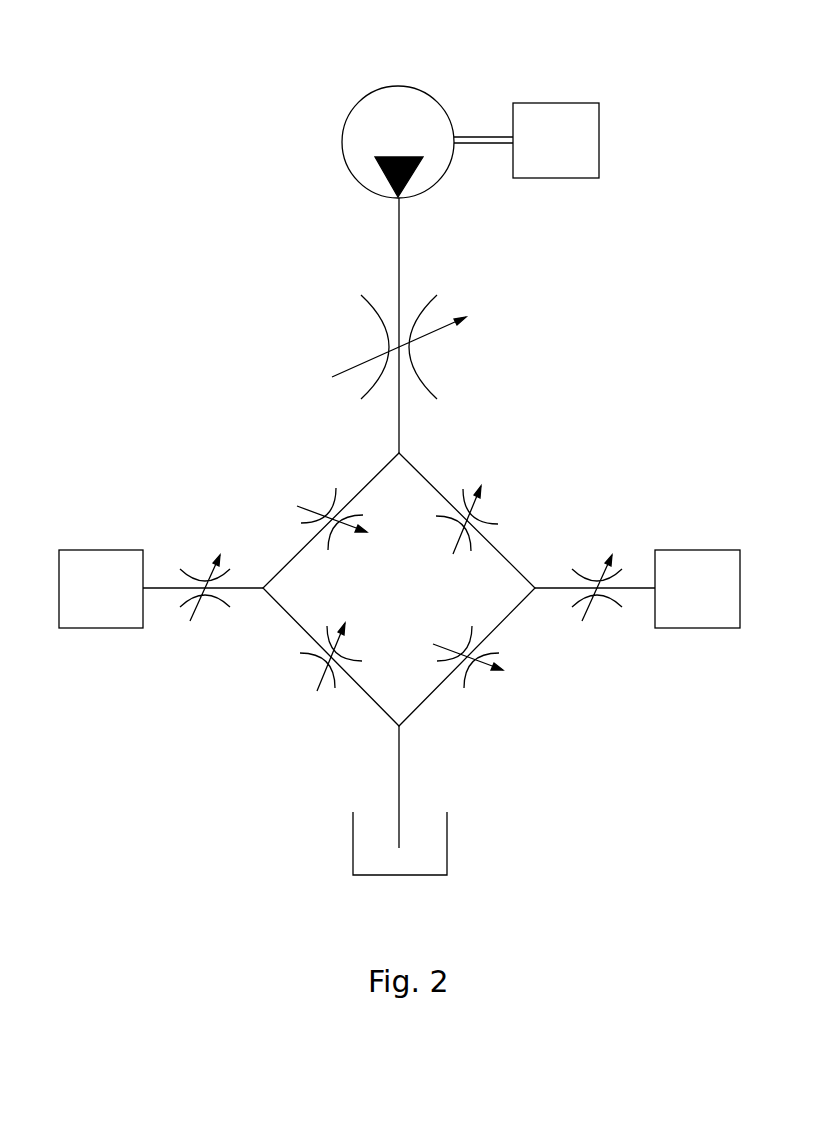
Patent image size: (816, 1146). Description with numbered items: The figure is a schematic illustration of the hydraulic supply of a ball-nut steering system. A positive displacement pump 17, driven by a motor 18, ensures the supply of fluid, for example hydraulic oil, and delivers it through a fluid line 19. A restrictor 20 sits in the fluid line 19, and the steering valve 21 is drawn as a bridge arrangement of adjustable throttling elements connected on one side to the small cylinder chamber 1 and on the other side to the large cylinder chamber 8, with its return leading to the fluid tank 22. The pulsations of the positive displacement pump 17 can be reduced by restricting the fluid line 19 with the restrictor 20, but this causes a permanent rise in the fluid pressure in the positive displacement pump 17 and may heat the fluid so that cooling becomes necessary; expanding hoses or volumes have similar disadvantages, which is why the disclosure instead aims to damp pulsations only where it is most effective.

The small cylinder chamber 1 is at (108, 599).
The large cylinder chamber 8 is at (704, 599).
The positive displacement pump 17 is at (399, 86).
The motor 18 is at (572, 152).
The fluid line 19 is at (399, 258).
The restrictor 20 is at (437, 383).
The steering valve 21 is at (504, 556).
The fluid tank 22 is at (447, 843).